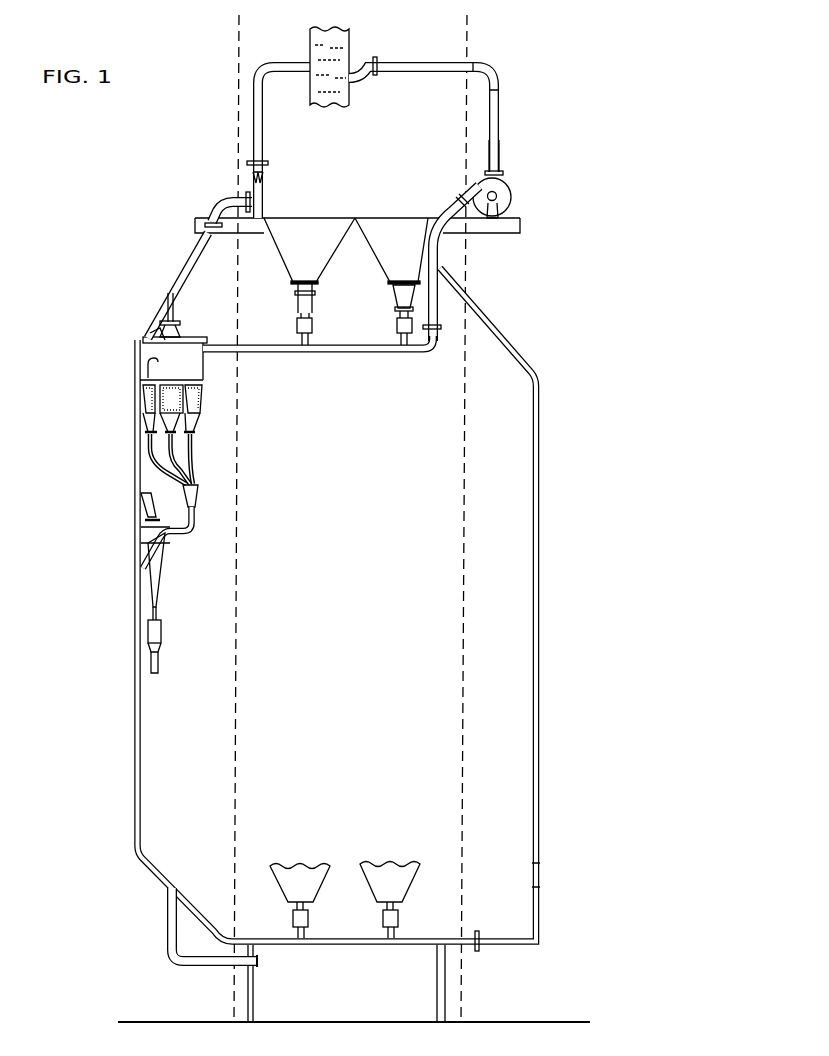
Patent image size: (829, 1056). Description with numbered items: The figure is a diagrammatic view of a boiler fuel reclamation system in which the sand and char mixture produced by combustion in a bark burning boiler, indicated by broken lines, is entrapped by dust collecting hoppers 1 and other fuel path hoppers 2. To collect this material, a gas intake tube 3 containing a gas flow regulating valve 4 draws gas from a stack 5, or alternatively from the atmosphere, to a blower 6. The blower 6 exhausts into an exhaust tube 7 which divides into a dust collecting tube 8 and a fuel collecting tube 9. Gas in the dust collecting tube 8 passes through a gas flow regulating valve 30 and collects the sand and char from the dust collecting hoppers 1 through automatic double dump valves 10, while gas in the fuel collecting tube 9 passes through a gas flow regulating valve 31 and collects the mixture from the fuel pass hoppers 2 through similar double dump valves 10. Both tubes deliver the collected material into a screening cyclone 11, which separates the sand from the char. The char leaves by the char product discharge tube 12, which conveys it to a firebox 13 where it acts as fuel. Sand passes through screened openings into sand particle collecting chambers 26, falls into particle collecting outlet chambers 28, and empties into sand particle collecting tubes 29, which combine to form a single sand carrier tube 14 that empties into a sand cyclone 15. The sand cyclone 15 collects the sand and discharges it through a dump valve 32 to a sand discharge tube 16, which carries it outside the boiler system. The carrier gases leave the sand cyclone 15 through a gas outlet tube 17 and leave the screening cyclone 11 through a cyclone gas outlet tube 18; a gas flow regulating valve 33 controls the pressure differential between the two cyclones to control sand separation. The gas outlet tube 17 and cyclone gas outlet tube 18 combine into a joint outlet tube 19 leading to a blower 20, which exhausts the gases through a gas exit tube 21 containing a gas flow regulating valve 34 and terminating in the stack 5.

The dust collecting hoppers 1 is at (290, 255).
The fuel path hoppers 2 is at (297, 885).
The gas intake tube 3 is at (415, 62).
The gas flow regulating valve 4 is at (502, 174).
The stack 5 is at (318, 50).
The blower 6 is at (512, 190).
The exhaust tube 7 is at (449, 230).
The dust collecting tube 8 is at (345, 353).
The fuel collecting tube 9 is at (135, 455).
The automatic double dump valves 10 is at (397, 325).
The screening cyclone 11 is at (218, 368).
The char product discharge tube 12 is at (158, 578).
The firebox 13 is at (316, 996).
The sand carrier tube 14 is at (195, 518).
The sand cyclone 15 is at (172, 552).
The sand discharge tube 16 is at (160, 668).
The gas outlet tube 17 is at (140, 340).
The cyclone gas outlet tube 18 is at (178, 312).
The joint outlet tube 19 is at (176, 265).
The blower 20 is at (230, 195).
The gas exit tube 21 is at (252, 115).
The sand particle collecting chambers 26 is at (205, 400).
The particle collecting outlet chambers 28 is at (200, 420).
The sand particle collecting tubes 29 is at (200, 468).
The gas flow regulating valve 30 is at (438, 330).
The gas flow regulating valve 31 is at (478, 935).
The dump valve 32 is at (162, 632).
The gas flow regulating valve 33 is at (158, 327).
The gas flow regulating valve 34 is at (248, 163).